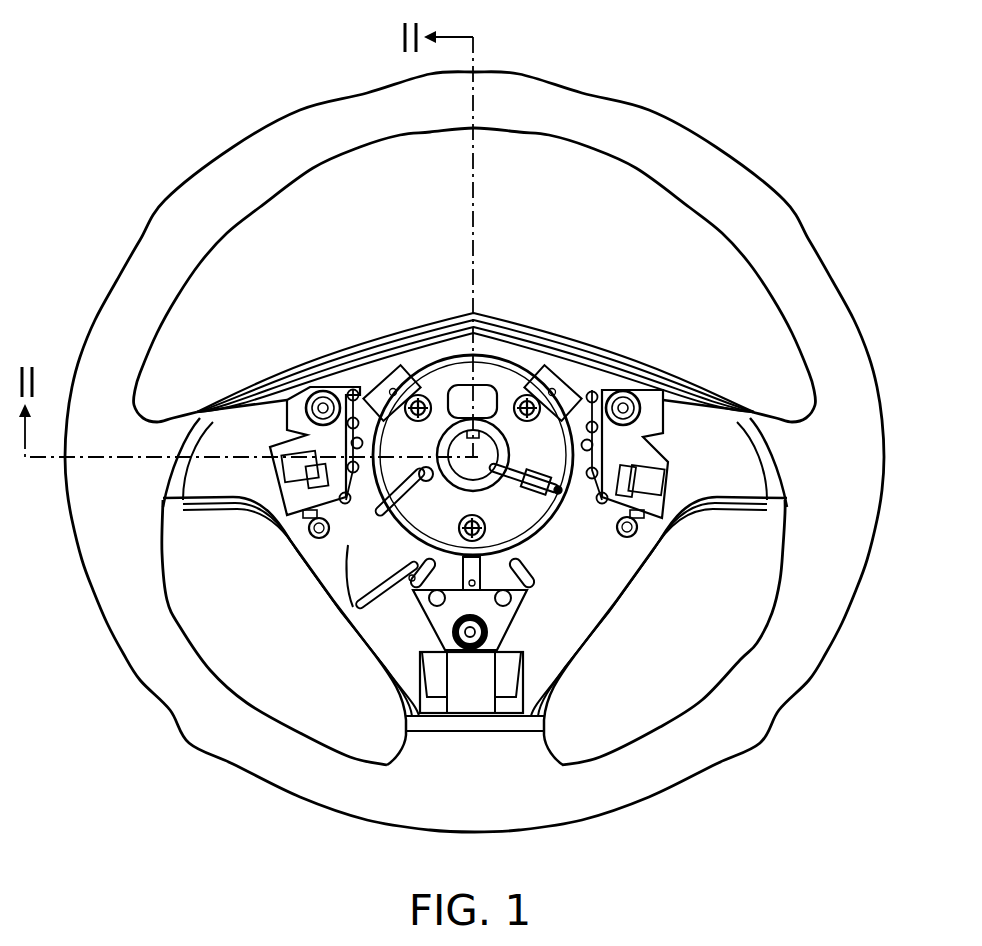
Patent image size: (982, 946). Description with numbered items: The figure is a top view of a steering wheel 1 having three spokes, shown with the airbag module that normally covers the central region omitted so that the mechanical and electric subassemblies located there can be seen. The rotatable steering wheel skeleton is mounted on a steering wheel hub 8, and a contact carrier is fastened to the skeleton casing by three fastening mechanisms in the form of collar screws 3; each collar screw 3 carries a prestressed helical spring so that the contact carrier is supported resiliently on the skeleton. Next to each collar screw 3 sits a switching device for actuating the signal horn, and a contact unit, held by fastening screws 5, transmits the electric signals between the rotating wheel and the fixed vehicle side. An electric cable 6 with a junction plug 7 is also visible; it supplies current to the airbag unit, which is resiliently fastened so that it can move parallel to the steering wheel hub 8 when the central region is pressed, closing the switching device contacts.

The steering wheel 1 is at (770, 189).
The collar screws 3 is at (316, 393).
The fastening screws 5 is at (415, 396).
The electric cable 6 is at (407, 498).
The junction plug 7 is at (395, 600).
The steering wheel hub 8 is at (484, 468).